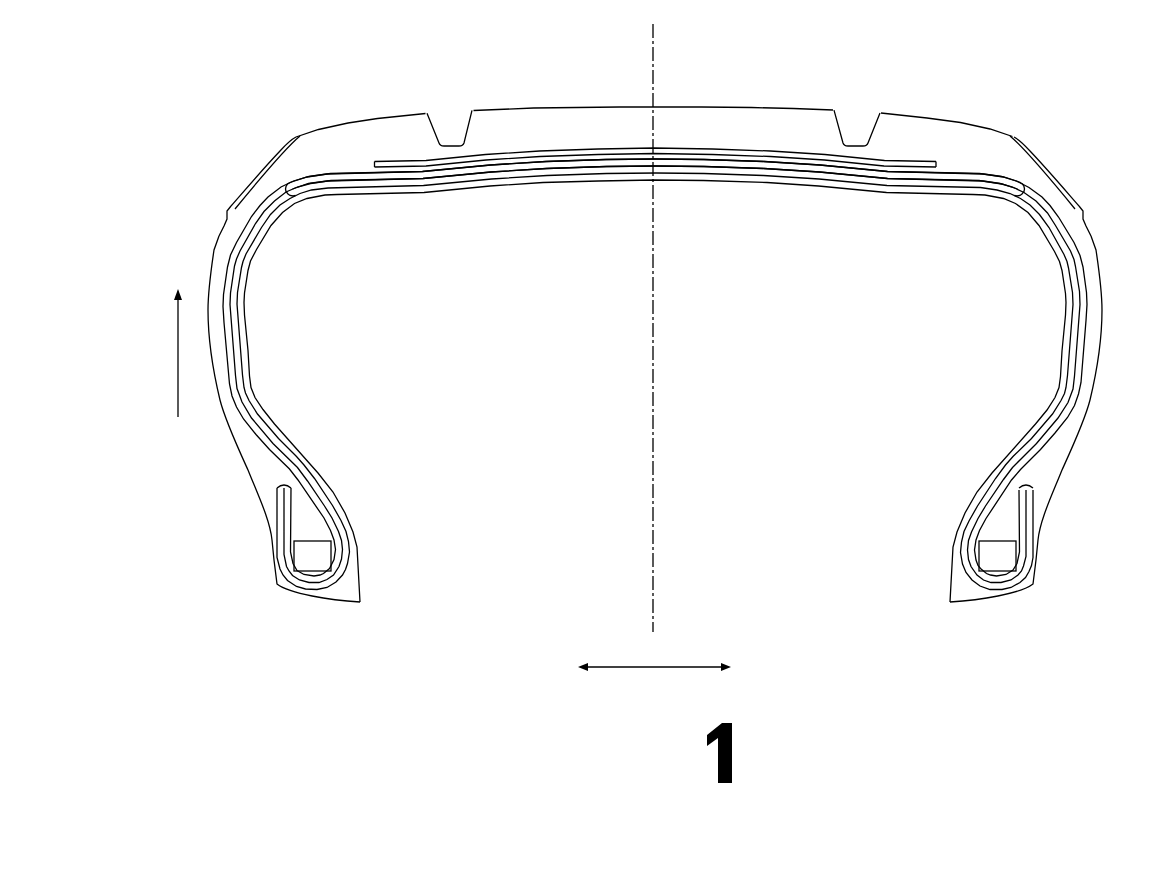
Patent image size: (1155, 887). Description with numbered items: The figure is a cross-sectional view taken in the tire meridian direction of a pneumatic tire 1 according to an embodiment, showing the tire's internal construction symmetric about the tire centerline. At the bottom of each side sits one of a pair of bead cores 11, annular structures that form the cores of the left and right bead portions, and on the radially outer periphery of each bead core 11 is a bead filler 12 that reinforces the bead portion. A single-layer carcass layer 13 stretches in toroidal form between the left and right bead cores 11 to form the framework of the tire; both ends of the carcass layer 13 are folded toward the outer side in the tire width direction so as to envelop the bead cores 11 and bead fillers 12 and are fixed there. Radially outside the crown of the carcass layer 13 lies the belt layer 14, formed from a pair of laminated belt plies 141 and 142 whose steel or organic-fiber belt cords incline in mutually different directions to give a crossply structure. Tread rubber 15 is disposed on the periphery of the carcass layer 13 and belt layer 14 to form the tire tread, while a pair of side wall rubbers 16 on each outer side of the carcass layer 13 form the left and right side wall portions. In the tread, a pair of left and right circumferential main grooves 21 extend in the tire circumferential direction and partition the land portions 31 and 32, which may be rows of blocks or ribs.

The pneumatic tire 1 is at (943, 50).
The bead core 11 is at (320, 560).
The bead filler 12 is at (310, 513).
The carcass layer 13 is at (244, 307).
The belt layer 14 is at (952, 262).
The belt ply 141 is at (947, 182).
The belt ply 142 is at (910, 174).
The tread rubber 15 is at (968, 122).
The side wall rubber 16 is at (216, 272).
The circumferential main groove 21 is at (450, 122).
The land portion 31 is at (672, 106).
The land portion 32 is at (392, 112).